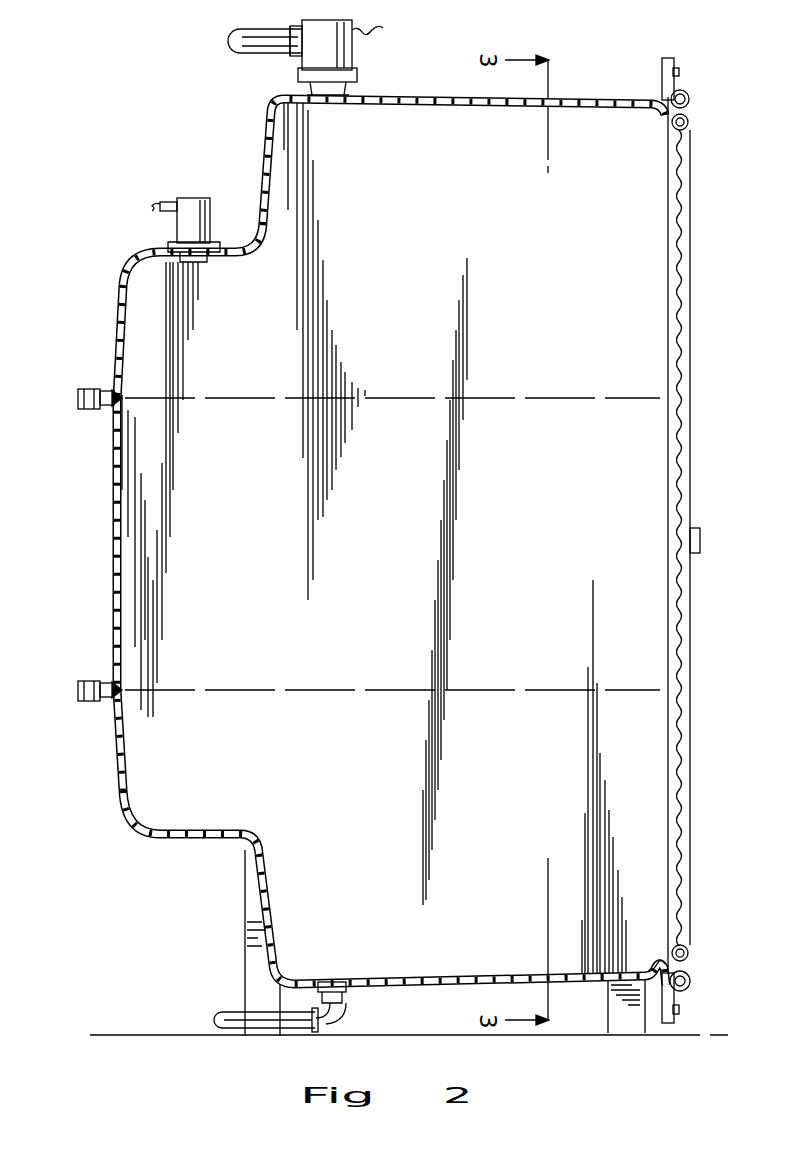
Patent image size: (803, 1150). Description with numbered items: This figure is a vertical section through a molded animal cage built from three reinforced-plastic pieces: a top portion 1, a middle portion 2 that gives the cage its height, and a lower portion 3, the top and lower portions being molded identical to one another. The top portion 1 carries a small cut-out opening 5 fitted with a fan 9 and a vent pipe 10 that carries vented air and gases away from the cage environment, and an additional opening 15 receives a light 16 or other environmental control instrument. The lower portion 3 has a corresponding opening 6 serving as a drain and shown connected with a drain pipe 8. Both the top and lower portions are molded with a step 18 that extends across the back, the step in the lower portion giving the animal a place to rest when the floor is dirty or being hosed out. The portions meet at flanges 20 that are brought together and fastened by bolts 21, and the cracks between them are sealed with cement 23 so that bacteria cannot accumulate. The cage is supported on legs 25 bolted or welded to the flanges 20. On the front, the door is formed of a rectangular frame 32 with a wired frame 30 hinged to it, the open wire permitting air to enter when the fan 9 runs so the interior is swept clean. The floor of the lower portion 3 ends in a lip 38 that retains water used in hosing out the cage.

The top portion 1 is at (248, 152).
The middle portion 2 is at (100, 526).
The lower portion 3 is at (108, 809).
The opening 5 is at (338, 103).
The opening 6 is at (336, 984).
The drain pipe 8 is at (300, 1026).
The fan 9 is at (352, 48).
The vent pipe 10 is at (250, 52).
The additional opening 15 is at (180, 254).
The light 16 is at (207, 258).
The step 18 is at (222, 252).
The flanges 20 is at (72, 397).
The bolts 21 is at (100, 388).
The cement 23 is at (124, 397).
The legs 25 is at (252, 953).
The wired frame 30 is at (692, 716).
The rectangular frame 32 is at (691, 99).
The lip 38 is at (660, 968).